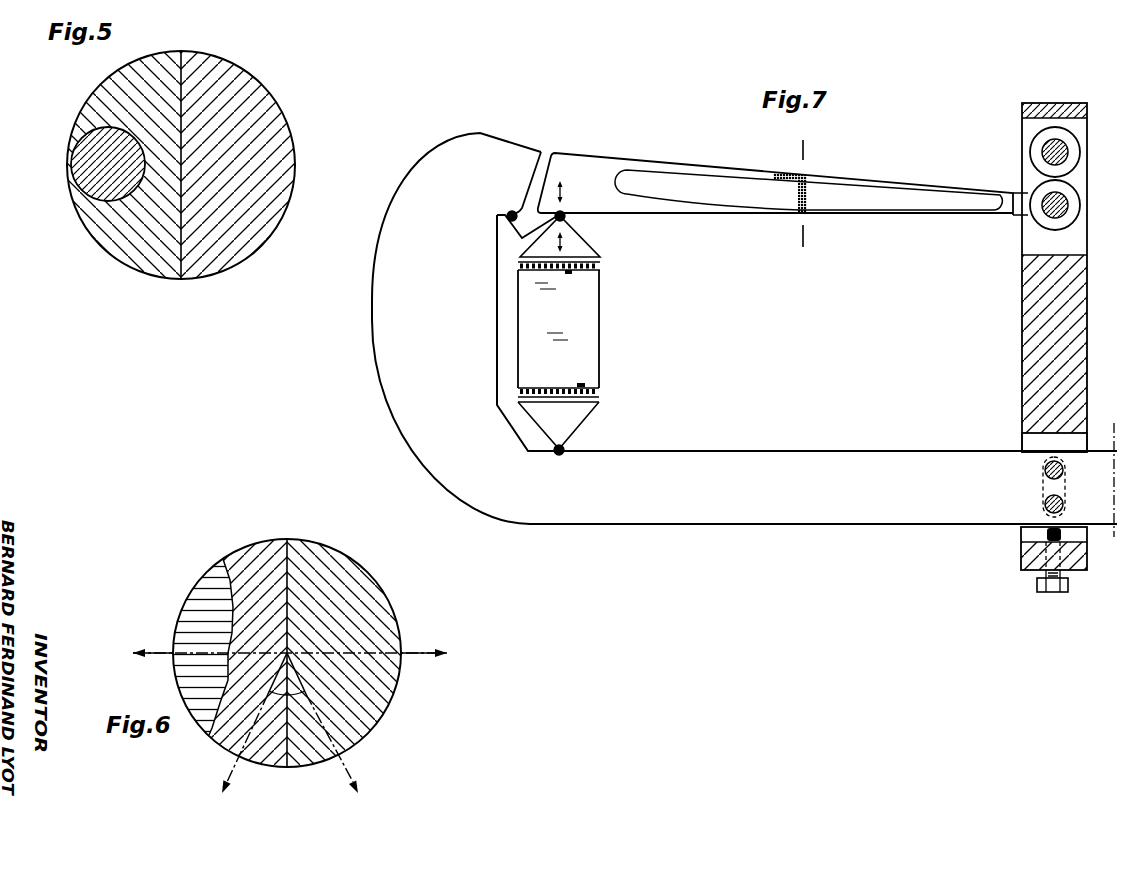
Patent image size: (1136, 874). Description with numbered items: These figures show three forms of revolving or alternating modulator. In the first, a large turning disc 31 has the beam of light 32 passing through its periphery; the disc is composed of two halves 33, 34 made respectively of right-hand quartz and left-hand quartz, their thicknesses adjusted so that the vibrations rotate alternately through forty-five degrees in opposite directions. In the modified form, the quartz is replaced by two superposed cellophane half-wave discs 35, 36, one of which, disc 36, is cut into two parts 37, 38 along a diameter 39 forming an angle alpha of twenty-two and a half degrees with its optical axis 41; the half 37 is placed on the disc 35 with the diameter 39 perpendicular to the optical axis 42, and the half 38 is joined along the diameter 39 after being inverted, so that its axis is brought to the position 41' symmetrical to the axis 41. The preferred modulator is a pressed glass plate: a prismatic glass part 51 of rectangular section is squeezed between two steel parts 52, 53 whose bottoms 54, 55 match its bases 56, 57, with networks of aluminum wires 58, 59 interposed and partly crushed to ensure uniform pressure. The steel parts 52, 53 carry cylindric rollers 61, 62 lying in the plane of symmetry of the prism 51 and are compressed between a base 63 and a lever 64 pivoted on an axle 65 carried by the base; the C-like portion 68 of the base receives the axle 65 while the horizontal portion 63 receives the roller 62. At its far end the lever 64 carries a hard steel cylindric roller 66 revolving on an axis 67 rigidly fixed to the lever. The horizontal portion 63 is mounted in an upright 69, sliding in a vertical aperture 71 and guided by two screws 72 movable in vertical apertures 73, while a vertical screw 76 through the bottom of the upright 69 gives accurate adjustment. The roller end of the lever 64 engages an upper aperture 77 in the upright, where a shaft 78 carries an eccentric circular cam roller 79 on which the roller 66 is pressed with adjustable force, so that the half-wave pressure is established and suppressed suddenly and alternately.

In FIG. 5, the turning disc 31 is at (296, 127).
In FIG. 5, the beam of light 32 is at (97, 167).
In FIG. 5, the right-hand quartz half 33 is at (137, 92).
In FIG. 5, the left-hand quartz half 34 is at (235, 118).
In FIG. 6, the cellophane half-wave disc 35 is at (193, 623).
In FIG. 6, the cellophane half-wave disc 36 is at (371, 573).
In FIG. 6, the half of disc 37 is at (242, 562).
In FIG. 6, the half of disc 38 is at (313, 578).
In FIG. 6, the diameter 39 is at (293, 747).
In FIG. 6, the optical axis 41 is at (230, 723).
In FIG. 6, the inverted optical axis 41' is at (348, 723).
In FIG. 6, the optical axis 42 is at (417, 650).
In FIG. 7, the glass part 51 is at (593, 320).
In FIG. 7, the steel pressing part 52 is at (583, 237).
In FIG. 7, the steel pressing part 53 is at (582, 428).
In FIG. 7, the bottom 54 is at (592, 262).
In FIG. 7, the bottom 55 is at (600, 400).
In FIG. 7, the base 56 is at (568, 273).
In FIG. 7, the base 57 is at (582, 385).
In FIG. 7, the aluminum wire network 58 is at (600, 267).
In FIG. 7, the aluminum wire network 59 is at (600, 391).
In FIG. 7, the cylindric roller 61 is at (562, 211).
In FIG. 7, the cylindric roller 62 is at (562, 455).
In FIG. 7, the base 63 is at (832, 490).
In FIG. 7, the lever 64 is at (703, 187).
In FIG. 7, the axle 65 is at (511, 210).
In FIG. 7, the cylindric roller 66 is at (1080, 217).
In FIG. 7, the axis 67 is at (1048, 205).
In FIG. 7, the C-like portion 68 is at (392, 285).
In FIG. 7, the upright 69 is at (1065, 348).
In FIG. 7, the vertical aperture 71 is at (1028, 445).
In FIG. 7, the screws 72 is at (1045, 512).
In FIG. 7, the vertical apertures 73 is at (1067, 492).
In FIG. 7, the vertical screw 76 is at (1045, 545).
In FIG. 7, the upper aperture 77 is at (1030, 182).
In FIG. 7, the shaft 78 is at (1053, 145).
In FIG. 7, the circular cam roller 79 is at (1070, 130).